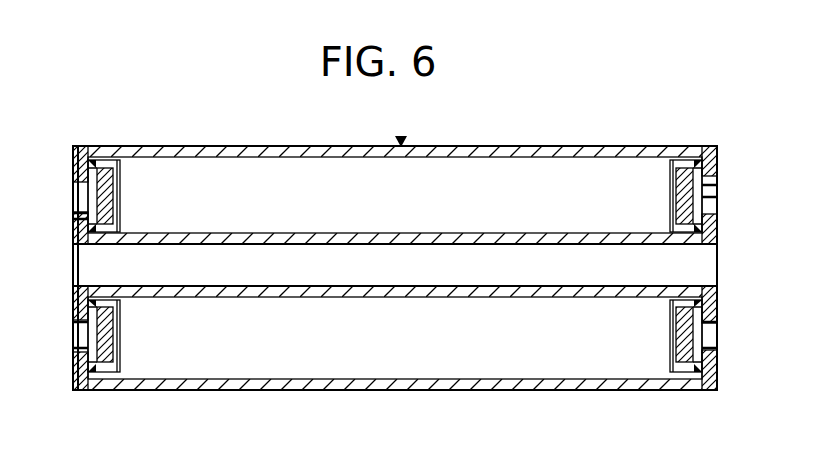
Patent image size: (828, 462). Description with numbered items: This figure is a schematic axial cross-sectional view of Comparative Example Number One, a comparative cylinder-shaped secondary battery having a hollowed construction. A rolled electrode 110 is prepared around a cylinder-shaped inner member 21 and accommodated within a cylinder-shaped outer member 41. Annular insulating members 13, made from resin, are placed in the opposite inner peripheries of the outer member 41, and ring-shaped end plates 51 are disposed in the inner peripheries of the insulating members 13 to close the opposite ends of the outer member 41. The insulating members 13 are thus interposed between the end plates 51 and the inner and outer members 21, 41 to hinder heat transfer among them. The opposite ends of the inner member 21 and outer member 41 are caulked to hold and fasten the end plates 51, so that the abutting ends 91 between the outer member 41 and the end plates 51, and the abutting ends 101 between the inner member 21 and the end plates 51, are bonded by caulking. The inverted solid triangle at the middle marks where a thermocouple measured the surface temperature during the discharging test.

The rolled electrode 110 is at (473, 203).
The cylinder-shaped outer member 41 is at (650, 146).
The cylinder-shaped inner member 21 is at (718, 238).
The abutting ends 91 is at (73, 163).
The abutting ends 101 is at (75, 226).
The ring-shaped end plate 51 is at (718, 202).
The insulating member 13 is at (78, 214).